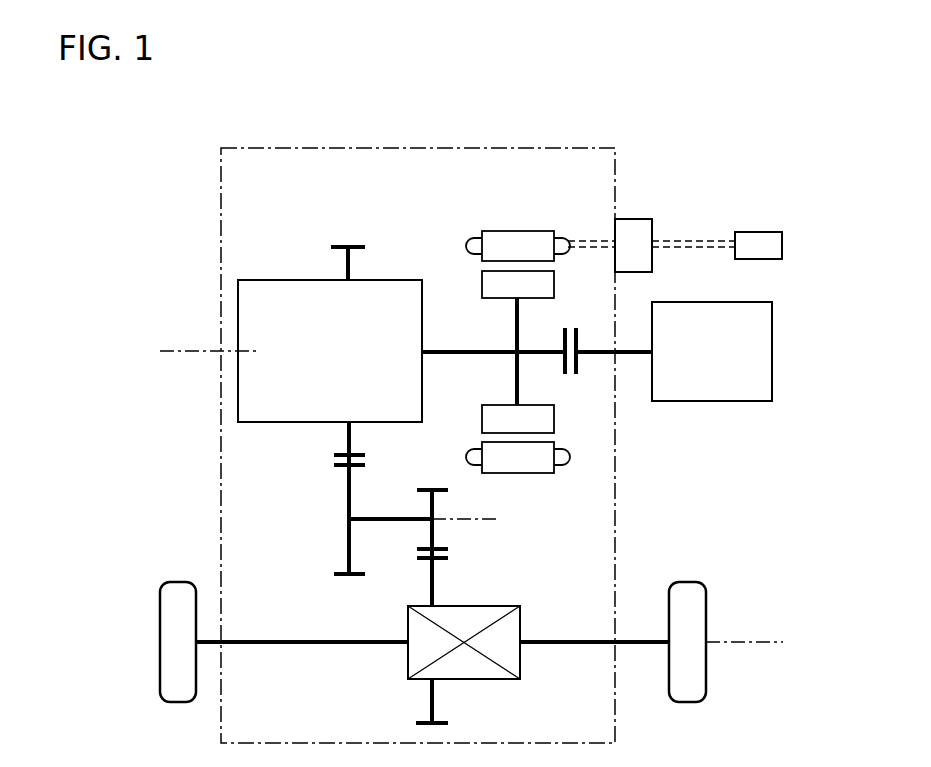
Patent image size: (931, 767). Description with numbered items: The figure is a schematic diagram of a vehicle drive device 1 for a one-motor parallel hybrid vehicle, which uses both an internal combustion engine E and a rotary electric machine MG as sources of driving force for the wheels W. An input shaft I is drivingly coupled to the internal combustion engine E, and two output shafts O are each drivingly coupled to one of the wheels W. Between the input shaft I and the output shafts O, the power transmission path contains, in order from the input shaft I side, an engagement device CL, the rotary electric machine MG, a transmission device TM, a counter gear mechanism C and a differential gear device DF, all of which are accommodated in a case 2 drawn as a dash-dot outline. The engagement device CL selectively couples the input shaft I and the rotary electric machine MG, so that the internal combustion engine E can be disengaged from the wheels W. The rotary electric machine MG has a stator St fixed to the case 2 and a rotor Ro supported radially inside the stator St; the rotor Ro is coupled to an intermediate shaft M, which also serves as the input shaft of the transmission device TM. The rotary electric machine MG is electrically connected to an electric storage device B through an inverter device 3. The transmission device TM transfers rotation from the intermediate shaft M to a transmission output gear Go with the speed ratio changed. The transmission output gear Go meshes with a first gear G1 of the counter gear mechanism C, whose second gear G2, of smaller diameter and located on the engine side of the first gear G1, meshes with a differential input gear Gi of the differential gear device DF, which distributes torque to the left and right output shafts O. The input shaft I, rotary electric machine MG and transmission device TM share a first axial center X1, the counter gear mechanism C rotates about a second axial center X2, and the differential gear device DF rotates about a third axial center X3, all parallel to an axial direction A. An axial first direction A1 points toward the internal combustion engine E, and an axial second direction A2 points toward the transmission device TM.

The vehicle drive device 1 is at (170, 145).
The case 2 is at (280, 148).
The inverter device 3 is at (637, 219).
The axial direction A is at (564, 97).
The axial first direction A1 is at (586, 98).
The axial second direction A2 is at (477, 98).
The electric storage device B is at (757, 232).
The counter gear mechanism C is at (328, 500).
The engagement device CL is at (574, 326).
The differential gear device DF is at (478, 681).
The internal combustion engine E is at (712, 402).
The first gear G1 is at (345, 578).
The second gear G2 is at (428, 488).
The differential input gear Gi is at (445, 562).
The transmission output gear Go is at (352, 246).
The input shaft I is at (620, 350).
The intermediate shaft M is at (430, 350).
The rotary electric machine MG is at (480, 292).
The output shaft O is at (583, 594).
The rotor Ro is at (518, 352).
The stator St is at (518, 352).
The transmission device TM is at (265, 279).
The wheel W is at (183, 590).
The first axial center X1 is at (186, 343).
The second axial center X2 is at (507, 521).
The third axial center X3 is at (745, 645).